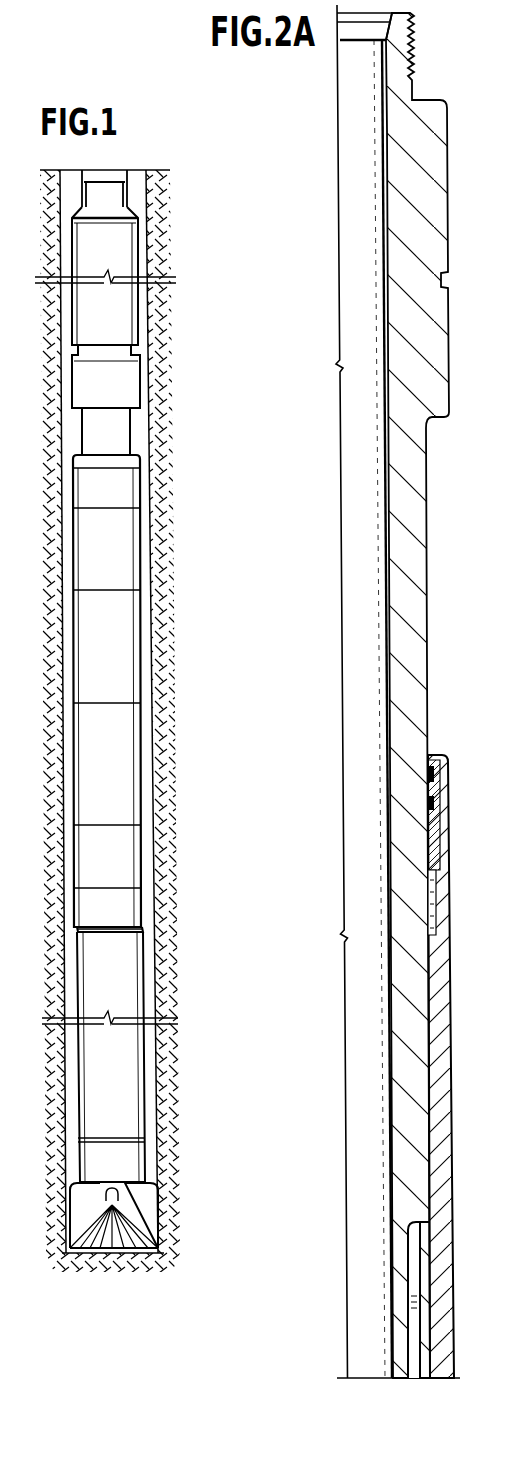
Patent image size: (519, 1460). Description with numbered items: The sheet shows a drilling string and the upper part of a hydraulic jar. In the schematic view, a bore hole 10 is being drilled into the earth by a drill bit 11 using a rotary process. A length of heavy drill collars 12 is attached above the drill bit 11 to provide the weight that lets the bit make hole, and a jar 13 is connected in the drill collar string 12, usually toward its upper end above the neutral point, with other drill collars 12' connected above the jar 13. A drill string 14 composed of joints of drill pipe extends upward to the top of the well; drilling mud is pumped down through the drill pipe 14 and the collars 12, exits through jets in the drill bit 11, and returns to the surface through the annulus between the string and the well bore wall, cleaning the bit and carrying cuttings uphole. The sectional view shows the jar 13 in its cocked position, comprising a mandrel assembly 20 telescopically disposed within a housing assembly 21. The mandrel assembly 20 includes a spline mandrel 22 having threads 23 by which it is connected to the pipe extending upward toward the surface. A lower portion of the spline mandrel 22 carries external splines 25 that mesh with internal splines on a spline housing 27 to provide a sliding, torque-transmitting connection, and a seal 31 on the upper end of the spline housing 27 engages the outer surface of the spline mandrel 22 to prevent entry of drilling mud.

In FIG. 1, the bore hole 10 is at (151, 938).
In FIG. 1, the drill bit 11 is at (140, 1213).
In FIG. 1, the drill collars 12 is at (151, 1054).
In FIG. 1, the drill collars 12' is at (144, 331).
In FIG. 1, the jar 13 is at (122, 665).
In FIG. 2A, the jar 13 is at (451, 695).
In FIG. 1, the drill string 14 is at (122, 180).
In FIG. 2A, the mandrel assembly 20 is at (429, 644).
In FIG. 2A, the housing assembly 21 is at (463, 1062).
In FIG. 2A, the spline mandrel 22 is at (410, 984).
In FIG. 2A, the threads 23 is at (416, 57).
In FIG. 2A, the external splines 25 is at (415, 1333).
In FIG. 2A, the spline housing 27 is at (442, 1037).
In FIG. 2A, the seal 31 is at (448, 767).